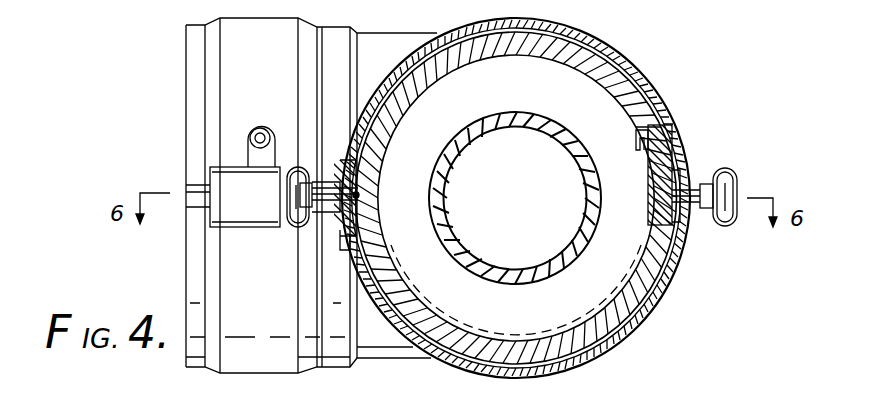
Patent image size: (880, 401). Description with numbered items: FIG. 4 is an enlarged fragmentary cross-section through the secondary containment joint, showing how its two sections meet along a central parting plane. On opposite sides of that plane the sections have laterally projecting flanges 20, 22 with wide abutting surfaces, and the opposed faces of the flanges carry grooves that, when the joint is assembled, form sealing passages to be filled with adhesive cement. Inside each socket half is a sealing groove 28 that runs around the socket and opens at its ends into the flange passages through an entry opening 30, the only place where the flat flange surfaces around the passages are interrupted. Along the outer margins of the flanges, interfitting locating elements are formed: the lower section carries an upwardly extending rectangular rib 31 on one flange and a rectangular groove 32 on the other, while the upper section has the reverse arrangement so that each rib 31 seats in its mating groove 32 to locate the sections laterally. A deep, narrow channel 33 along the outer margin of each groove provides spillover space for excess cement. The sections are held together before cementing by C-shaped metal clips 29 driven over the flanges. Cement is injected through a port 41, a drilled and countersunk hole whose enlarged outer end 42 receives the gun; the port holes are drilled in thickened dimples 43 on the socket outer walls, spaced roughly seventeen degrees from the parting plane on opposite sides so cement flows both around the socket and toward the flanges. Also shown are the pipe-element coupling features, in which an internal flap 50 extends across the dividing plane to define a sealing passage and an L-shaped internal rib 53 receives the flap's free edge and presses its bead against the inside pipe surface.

The flange 20 is at (692, 218).
The flange 22 is at (330, 170).
The sealing groove 28 is at (420, 62).
The metal clip 29 is at (286, 222).
The entry opening 30 is at (358, 192).
The rib 31 is at (293, 191).
The groove 32 is at (296, 170).
The channel 33 is at (708, 184).
The port 41 is at (258, 128).
The enlarged outer end 42 is at (253, 132).
The dimple 43 is at (248, 152).
The internal flap 50 is at (365, 210).
The internal rib 53 is at (372, 245).